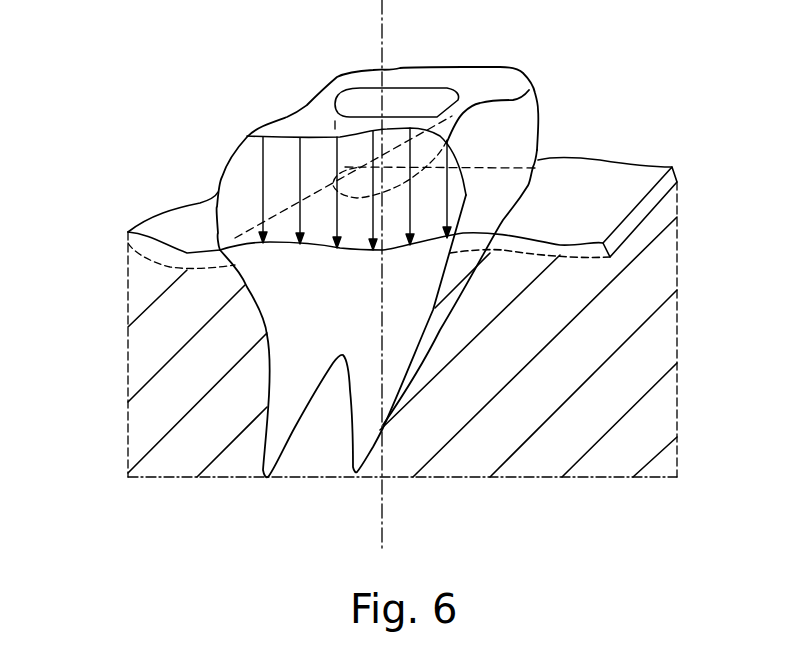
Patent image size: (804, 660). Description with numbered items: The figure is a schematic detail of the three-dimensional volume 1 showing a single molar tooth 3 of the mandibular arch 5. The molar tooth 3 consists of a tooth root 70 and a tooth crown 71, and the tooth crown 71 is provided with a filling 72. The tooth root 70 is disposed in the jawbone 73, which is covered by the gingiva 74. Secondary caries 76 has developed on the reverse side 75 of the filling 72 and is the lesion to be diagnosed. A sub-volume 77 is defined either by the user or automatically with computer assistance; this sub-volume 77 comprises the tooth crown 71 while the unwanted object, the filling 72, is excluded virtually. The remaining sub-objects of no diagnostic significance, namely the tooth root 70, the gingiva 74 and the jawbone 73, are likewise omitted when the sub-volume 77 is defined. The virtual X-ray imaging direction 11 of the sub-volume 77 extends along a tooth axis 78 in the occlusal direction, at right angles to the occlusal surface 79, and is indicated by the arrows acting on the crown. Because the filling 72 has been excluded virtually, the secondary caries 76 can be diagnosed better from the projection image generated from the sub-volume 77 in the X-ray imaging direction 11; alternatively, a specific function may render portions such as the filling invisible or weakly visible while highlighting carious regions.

The 3D volume 1 is at (622, 207).
The molar tooth 3 is at (538, 133).
The mandibular arch 5 is at (627, 262).
The virtual X-ray imaging direction 11 is at (263, 162).
The tooth root 70 is at (452, 297).
The tooth crown 71 is at (520, 112).
The filling 72 is at (448, 128).
The jawbone 73 is at (143, 380).
The gingiva 74 is at (663, 183).
The reverse side 75 is at (520, 117).
The secondary caries 76 is at (392, 148).
The sub-volume 77 is at (237, 185).
The tooth axis 78 is at (383, 510).
The occlusal surface 79 is at (487, 87).